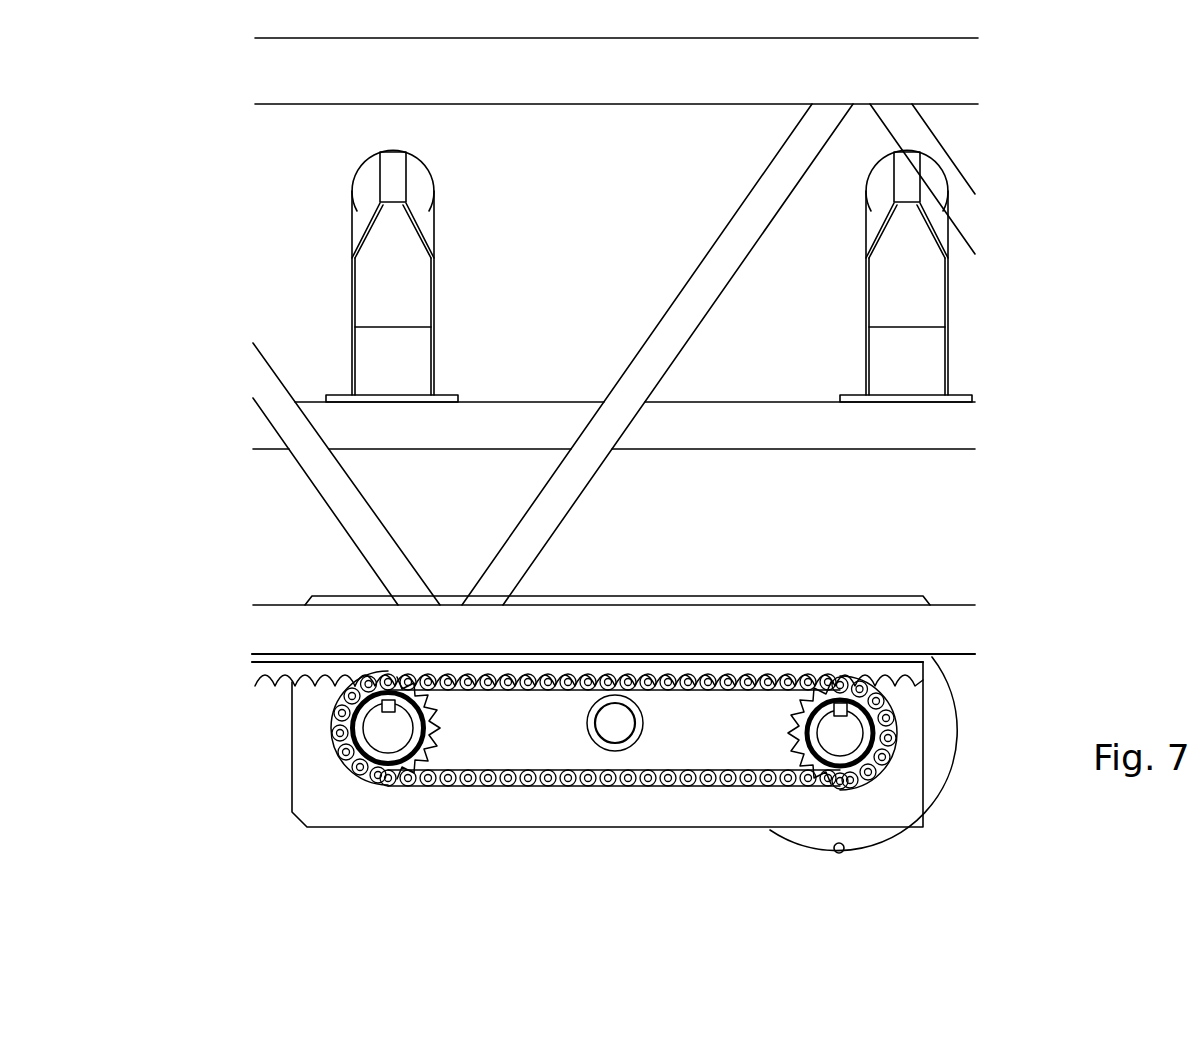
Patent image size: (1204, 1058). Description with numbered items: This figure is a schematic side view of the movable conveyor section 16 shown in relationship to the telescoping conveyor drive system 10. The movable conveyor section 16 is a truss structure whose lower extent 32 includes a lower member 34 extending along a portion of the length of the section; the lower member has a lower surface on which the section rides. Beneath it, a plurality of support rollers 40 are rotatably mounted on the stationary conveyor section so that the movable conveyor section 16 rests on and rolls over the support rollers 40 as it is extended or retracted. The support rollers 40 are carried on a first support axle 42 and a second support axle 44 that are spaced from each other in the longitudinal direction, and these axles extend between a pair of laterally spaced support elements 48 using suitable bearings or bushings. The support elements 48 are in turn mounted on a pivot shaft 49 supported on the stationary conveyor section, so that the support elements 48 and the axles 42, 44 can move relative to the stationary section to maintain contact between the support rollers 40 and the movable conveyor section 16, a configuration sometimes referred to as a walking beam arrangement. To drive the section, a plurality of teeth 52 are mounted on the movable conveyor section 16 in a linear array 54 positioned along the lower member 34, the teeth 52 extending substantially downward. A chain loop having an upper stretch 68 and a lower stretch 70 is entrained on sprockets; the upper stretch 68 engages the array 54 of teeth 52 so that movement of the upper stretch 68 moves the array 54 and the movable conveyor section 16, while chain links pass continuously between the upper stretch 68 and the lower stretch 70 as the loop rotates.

The telescoping conveyor drive system 10 is at (992, 700).
The movable conveyor section 16 is at (1003, 318).
The lower extent 32 is at (895, 562).
The lower member 34 is at (942, 625).
The support roller 40 is at (614, 790).
The first support axle 42 is at (847, 737).
The second support axle 44 is at (380, 737).
The support element 48 is at (357, 805).
The pivot shaft 49 is at (613, 728).
The teeth 52 is at (257, 688).
The array of teeth 54 is at (317, 693).
The upper stretch 68 is at (530, 690).
The lower stretch 70 is at (653, 788).